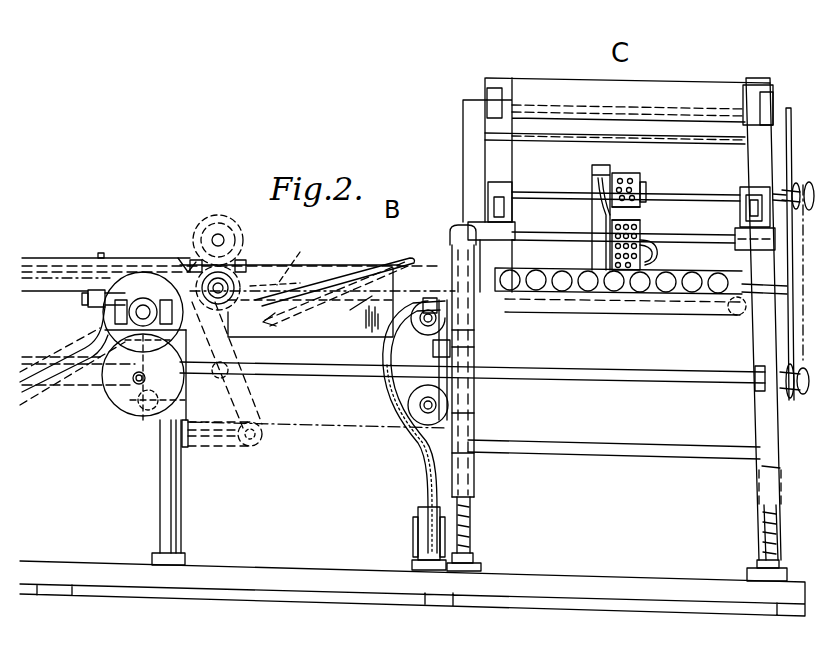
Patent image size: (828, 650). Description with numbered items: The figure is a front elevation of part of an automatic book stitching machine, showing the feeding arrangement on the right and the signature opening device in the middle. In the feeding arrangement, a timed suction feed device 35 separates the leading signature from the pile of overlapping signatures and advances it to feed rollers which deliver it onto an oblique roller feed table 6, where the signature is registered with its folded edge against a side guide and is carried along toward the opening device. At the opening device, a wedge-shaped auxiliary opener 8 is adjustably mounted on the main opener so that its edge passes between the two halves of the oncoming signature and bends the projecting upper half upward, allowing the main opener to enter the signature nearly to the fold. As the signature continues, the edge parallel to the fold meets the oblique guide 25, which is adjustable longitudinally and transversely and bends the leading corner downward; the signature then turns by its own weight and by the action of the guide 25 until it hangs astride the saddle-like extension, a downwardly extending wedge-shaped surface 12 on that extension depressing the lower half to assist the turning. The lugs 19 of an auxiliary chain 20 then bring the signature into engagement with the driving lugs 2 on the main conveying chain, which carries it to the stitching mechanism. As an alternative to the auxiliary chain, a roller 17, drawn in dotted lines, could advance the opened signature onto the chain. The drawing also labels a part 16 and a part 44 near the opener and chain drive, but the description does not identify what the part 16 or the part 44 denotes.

The driving devices 2 is at (104, 257).
The oblique roller feed table 6 is at (640, 292).
The auxiliary opener 8 is at (483, 270).
The wedge-shaped surface 12 is at (310, 302).
The drive sprocket housing 16 is at (222, 346).
The roller 17 is at (245, 232).
The lugs 19 is at (446, 292).
The auxiliary chain 20 is at (318, 433).
The oblique guide 25 is at (390, 266).
The timed suction feed device 35 is at (634, 174).
The link 44 is at (284, 257).